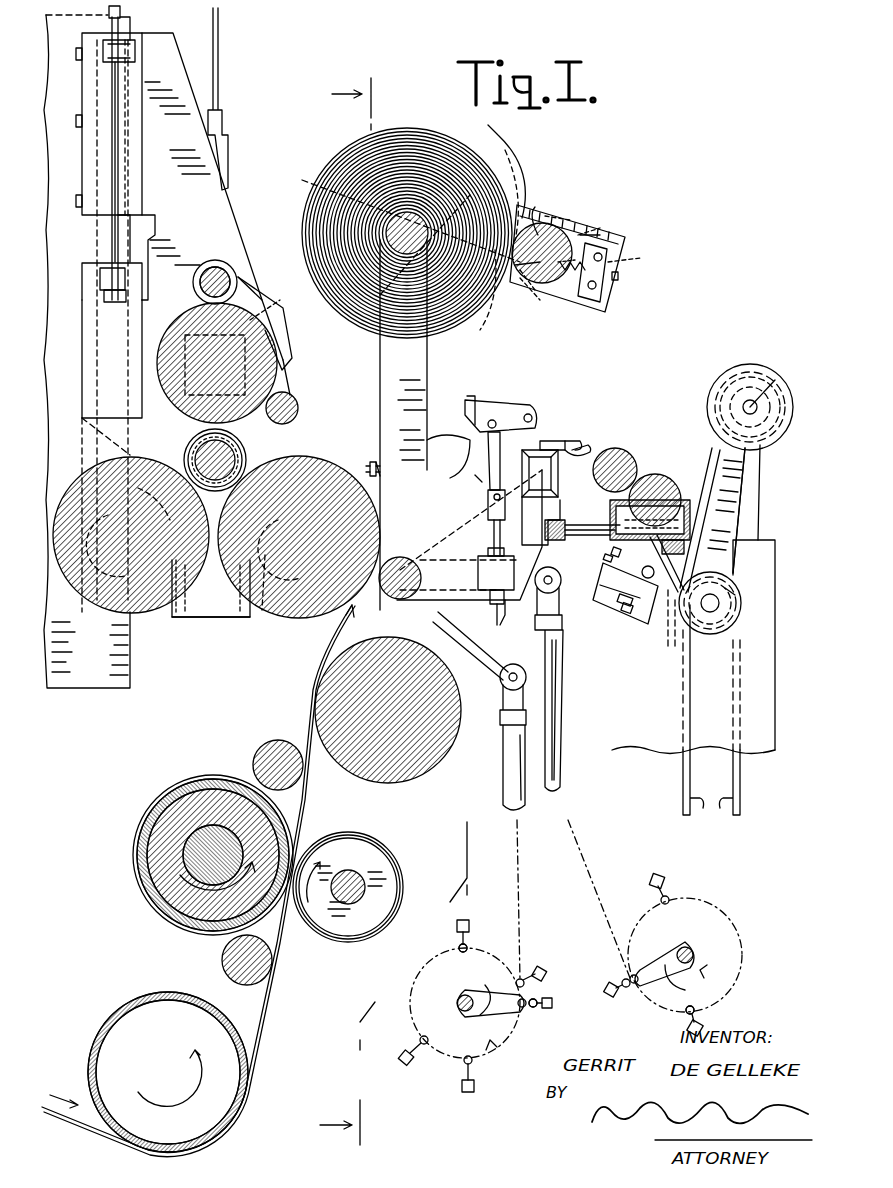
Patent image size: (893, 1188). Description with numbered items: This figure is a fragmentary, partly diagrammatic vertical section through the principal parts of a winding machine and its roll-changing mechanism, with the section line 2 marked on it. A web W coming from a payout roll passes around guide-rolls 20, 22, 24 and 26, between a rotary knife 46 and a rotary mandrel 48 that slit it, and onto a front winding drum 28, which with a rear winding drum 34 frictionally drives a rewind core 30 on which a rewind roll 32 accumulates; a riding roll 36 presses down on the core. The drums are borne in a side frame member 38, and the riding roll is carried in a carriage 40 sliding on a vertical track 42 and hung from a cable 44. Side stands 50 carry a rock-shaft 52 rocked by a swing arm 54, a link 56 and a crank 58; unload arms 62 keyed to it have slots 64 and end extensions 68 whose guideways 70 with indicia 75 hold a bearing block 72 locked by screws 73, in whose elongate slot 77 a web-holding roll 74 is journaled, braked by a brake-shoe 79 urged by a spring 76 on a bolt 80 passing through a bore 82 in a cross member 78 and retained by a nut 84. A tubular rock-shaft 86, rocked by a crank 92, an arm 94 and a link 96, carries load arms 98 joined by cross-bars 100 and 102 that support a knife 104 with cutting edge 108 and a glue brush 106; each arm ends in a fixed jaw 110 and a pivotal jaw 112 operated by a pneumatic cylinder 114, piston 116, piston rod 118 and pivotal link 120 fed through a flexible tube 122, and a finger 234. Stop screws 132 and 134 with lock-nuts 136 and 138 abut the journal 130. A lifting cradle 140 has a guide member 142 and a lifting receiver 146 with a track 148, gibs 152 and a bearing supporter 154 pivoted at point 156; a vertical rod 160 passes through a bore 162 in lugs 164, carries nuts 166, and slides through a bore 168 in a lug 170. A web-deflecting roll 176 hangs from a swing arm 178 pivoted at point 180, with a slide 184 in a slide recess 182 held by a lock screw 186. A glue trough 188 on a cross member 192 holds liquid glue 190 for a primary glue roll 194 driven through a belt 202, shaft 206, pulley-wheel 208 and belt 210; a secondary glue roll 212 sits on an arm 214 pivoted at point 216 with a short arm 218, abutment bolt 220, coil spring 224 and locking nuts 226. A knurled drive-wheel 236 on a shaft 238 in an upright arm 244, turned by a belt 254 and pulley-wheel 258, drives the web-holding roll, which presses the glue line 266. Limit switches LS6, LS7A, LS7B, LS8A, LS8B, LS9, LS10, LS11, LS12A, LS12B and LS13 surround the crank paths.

The guide-roll 20 is at (112, 1015).
The guide-roll 22 is at (224, 962).
The guide-roll 24 is at (262, 760).
The guide-roll 26 is at (380, 777).
The front winding drum 28 is at (300, 605).
The rewind core 30 is at (242, 455).
The rewind roll 32 is at (404, 130).
The rear winding drum 34 is at (133, 612).
The riding roll 36 is at (252, 292).
The side frame member 38 is at (56, 675).
The carriage 40 is at (220, 215).
The vertical track 42 is at (122, 14).
The cable 44 is at (220, 63).
The rotary knife 46 is at (336, 930).
The rotary mandrel 48 is at (162, 890).
The side stand 50 is at (762, 604).
The rock-shaft 52 is at (400, 556).
The swing arm 54 is at (495, 642).
The link 56 is at (510, 794).
The crank 58 is at (508, 1025).
The unload arm 62 is at (422, 343).
The slot 64 is at (310, 185).
The end extension 68 is at (538, 205).
The guideway 70 is at (508, 160).
The bearing block 72 is at (550, 282).
The screw 73 is at (568, 220).
The web-holding roll 74 is at (560, 290).
The indicia 75 is at (536, 205).
The spring 76 is at (598, 235).
The elongate slot 77 is at (512, 290).
The cross member 78 is at (605, 290).
The brake-shoe 79 is at (596, 224).
The bolt 80 is at (575, 275).
The bore 82 is at (620, 254).
The nut 84 is at (618, 276).
The tubular rock-shaft 86 is at (448, 520).
The crank 92 is at (660, 960).
The arm 94 is at (505, 603).
The link 96 is at (565, 770).
The load arm 98 is at (472, 462).
The cross-bar 100 is at (552, 475).
The cross-bar 102 is at (530, 546).
The knife 104 is at (552, 440).
The glue brush 106 is at (588, 524).
The cutting edge 108 is at (588, 448).
The fixed jaw 110 is at (530, 405).
The pivotal jaw 112 is at (468, 400).
The pneumatic cylinder 114 is at (478, 563).
The piston 116 is at (490, 580).
The piston rod 118 is at (494, 530).
The pivotal link 120 is at (500, 440).
The flexible tube 122 is at (445, 620).
The journal 130 is at (264, 612).
The stop screw 132 is at (368, 468).
The stop screw 134 is at (486, 495).
The lock-nut 136 is at (374, 464).
The lock-nut 138 is at (476, 478).
The lifting cradle 140 is at (110, 441).
The guide member 142 is at (105, 378).
The lifting receiver 146 is at (199, 627).
The track 148 is at (176, 436).
The gib 152 is at (205, 620).
The bearing supporter 154 is at (208, 575).
The pivot point 156 is at (176, 620).
The vertical rod 160 is at (112, 97).
The bore 162 is at (130, 245).
The lug 164 is at (100, 268).
The nuts 166 is at (126, 292).
The bore 168 is at (130, 35).
The lug 170 is at (108, 52).
The web-deflecting roll 176 is at (290, 403).
The swing arm 178 is at (232, 275).
The pivot point 180 is at (203, 287).
The slide recess 182 is at (262, 303).
The slide 184 is at (288, 375).
The lock screw 186 is at (283, 337).
The glue trough 188 is at (668, 590).
The liquid glue 190 is at (692, 500).
The cross member 192 is at (670, 552).
The primary glue roll 194 is at (655, 474).
The belt 202 is at (711, 733).
The shaft 206 is at (718, 600).
The pulley-wheel 208 is at (726, 625).
The belt 210 is at (670, 620).
The secondary glue roll 212 is at (630, 460).
The arm 214 is at (612, 550).
The pivot point 216 is at (648, 580).
The short arm 218 is at (615, 590).
The abutment bolt 220 is at (624, 612).
The coil spring 224 is at (605, 560).
The locking nuts 226 is at (618, 604).
The finger 234 is at (570, 441).
The drive-wheel 236 is at (752, 372).
The shaft 238 is at (775, 380).
The upright arm 244 is at (740, 484).
The belt 254 is at (760, 455).
The pulley-wheel 258 is at (730, 372).
The transverse line of glue 266 is at (480, 128).
The web W is at (78, 1118).
The section line 2 is at (384, 611).
The limit switch LS6 is at (404, 1057).
The limit switch LS7A is at (483, 922).
The limit switch LS7B is at (485, 928).
The limit switch LS8A is at (559, 1002).
The limit switch LS8B is at (564, 1012).
The limit switch LS9 is at (469, 1084).
The limit switch LS10 is at (680, 884).
The limit switch LS11 is at (625, 994).
The limit switch LS12A is at (725, 1018).
The limit switch LS12B is at (722, 1019).
The limit switch LS13 is at (555, 975).